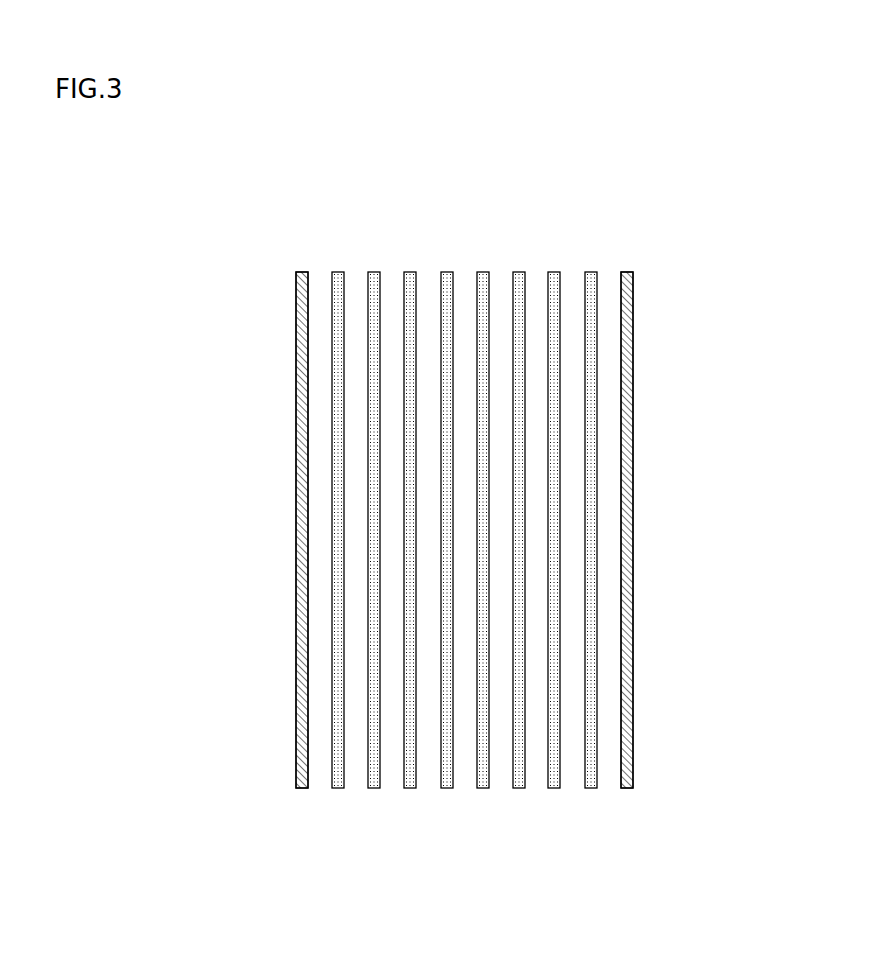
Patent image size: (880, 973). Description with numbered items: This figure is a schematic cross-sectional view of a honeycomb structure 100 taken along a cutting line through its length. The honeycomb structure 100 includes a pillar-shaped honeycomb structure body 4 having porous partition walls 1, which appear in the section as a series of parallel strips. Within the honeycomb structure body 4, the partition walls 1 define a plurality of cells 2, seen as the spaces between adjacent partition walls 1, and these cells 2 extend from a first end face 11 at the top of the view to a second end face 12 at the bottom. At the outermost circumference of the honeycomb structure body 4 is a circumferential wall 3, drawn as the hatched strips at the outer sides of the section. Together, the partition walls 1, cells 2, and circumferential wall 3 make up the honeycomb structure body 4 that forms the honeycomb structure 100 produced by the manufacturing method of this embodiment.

The honeycomb structure 100 is at (740, 159).
The partition wall 1 is at (520, 280).
The cell 2 is at (430, 283).
The circumferential wall 3 is at (628, 273).
The honeycomb structure body 4 is at (637, 443).
The first end face 11 is at (320, 265).
The second end face 12 is at (312, 805).